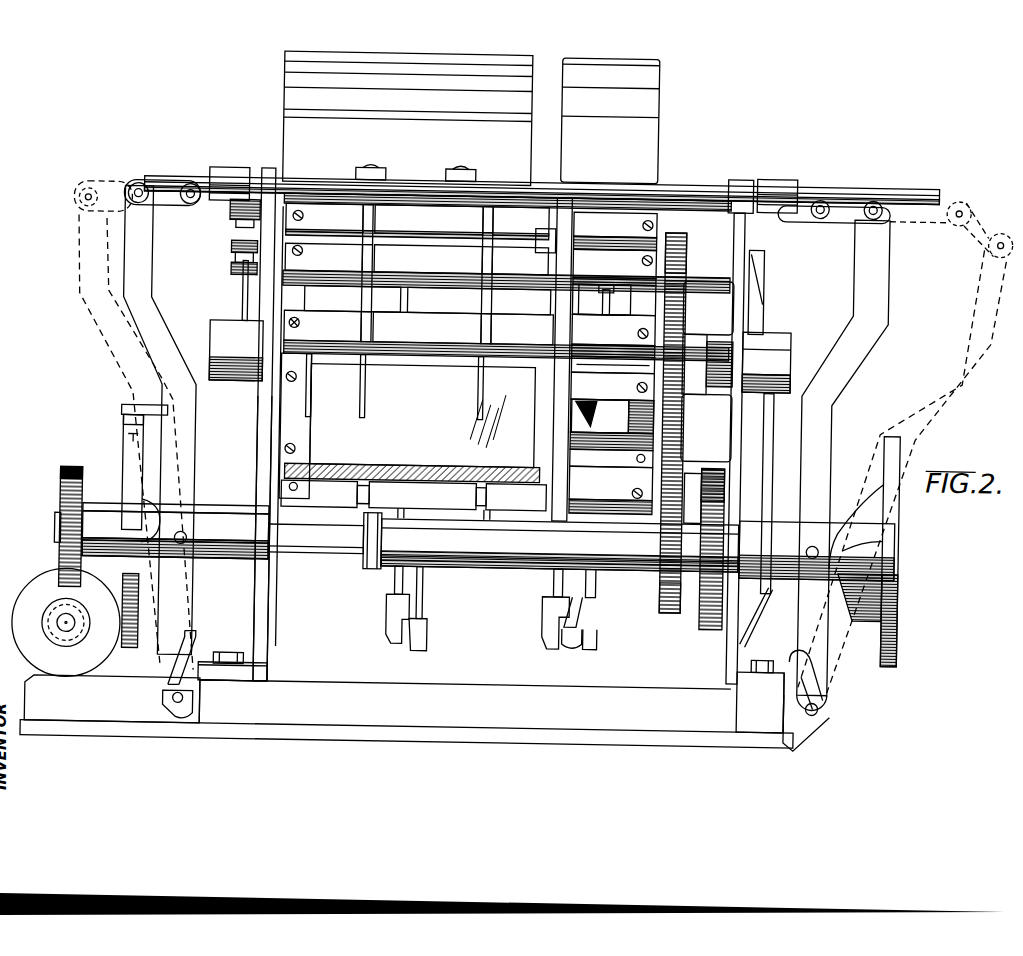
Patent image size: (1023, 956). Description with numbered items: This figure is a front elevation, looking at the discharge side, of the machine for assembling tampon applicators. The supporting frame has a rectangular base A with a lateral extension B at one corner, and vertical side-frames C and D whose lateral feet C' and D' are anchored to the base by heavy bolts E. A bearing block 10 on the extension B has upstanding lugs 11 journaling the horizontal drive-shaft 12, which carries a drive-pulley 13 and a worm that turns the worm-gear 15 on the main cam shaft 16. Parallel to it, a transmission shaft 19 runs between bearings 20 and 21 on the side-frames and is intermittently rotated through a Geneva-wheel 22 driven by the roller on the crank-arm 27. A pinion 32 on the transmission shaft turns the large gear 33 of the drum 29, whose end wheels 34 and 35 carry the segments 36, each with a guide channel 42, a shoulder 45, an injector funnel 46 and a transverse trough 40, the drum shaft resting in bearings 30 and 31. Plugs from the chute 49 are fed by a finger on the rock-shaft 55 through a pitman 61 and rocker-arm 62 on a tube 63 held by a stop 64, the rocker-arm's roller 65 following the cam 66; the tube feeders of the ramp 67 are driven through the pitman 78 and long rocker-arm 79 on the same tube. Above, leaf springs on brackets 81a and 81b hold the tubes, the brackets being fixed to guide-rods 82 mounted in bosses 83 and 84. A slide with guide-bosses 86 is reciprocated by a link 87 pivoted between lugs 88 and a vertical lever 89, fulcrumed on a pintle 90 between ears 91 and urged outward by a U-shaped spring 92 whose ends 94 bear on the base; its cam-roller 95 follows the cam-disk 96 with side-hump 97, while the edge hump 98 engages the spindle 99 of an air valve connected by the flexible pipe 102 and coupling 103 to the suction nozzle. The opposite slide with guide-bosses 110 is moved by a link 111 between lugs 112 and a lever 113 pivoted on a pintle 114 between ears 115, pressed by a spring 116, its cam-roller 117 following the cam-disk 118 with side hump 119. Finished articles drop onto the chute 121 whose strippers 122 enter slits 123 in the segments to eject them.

The bearing block 10 is at (37, 670).
The upstanding spaced lugs 11 is at (39, 610).
The horizontal drive-shaft 12 is at (70, 635).
The drive-pulley 13 is at (42, 585).
The worm-gear 15 is at (60, 475).
The main actuating or cam shaft 16 is at (54, 520).
The transmission shaft 19 is at (312, 560).
The bearing 20 is at (249, 561).
The bearing 21 is at (770, 576).
The Geneva-wheel 22 is at (705, 628).
The crank-arm 27 is at (692, 505).
The drum 29 is at (441, 506).
The bearing 30 is at (227, 330).
The bearing 31 is at (781, 352).
The pinion 32 is at (665, 614).
The large gear 33 is at (678, 308).
The end wheel 34 is at (308, 299).
The end wheel 35 is at (650, 278).
The segments 36 is at (453, 286).
The transverse trough 40 is at (558, 395).
The guide channel 42 is at (427, 328).
The shoulder 45 is at (427, 350).
The injector funnel 46 is at (538, 234).
The chute 49 is at (651, 152).
The rock-shaft 55 is at (710, 265).
The pitman 61 is at (555, 575).
The rocker-arm 62 is at (581, 646).
The tube 63 is at (476, 560).
The stop 64 is at (365, 565).
The roller 65 is at (590, 635).
The cam 66 is at (597, 582).
The ramp 67 is at (415, 75).
The pitman 78 is at (395, 580).
The long rocker-arm 79 is at (424, 595).
The bracket 81a is at (352, 172).
The bracket 81b is at (480, 172).
The guide-rods 82 is at (412, 182).
The bosses 83 is at (275, 172).
The bosses 84 is at (736, 176).
The guide-bosses 86 is at (226, 172).
The link 87 is at (168, 210).
The lugs 88 is at (220, 213).
The lever 89 is at (145, 263).
The pintle 90 is at (187, 703).
The ears 91 is at (180, 712).
The spring 92 is at (162, 664).
The spring ends 94 is at (262, 668).
The cam-roller 95 is at (198, 510).
The cam-disk 96 is at (125, 465).
The side-hump 97 is at (145, 538).
The edge hump 98 is at (123, 422).
The spindle 99 is at (121, 407).
The flexible pipe 102 is at (240, 290).
The coupling 103 is at (230, 254).
The guide-bosses 110 is at (775, 175).
The link 111 is at (846, 225).
The lugs 112 is at (813, 212).
The lever 113 is at (881, 275).
The pintle 114 is at (821, 707).
The ears 115 is at (803, 731).
The spring 116 is at (825, 674).
The cam-roller 117 is at (788, 582).
The cam-disk 118 is at (892, 574).
The side hump 119 is at (862, 539).
The chute 121 is at (408, 446).
The strippers 122 is at (365, 378).
The transverse slits 123 is at (491, 326).
The rectangular base A is at (330, 687).
The lateral extension B is at (82, 733).
The side-frame C is at (275, 539).
The lateral foot C' is at (229, 685).
The side-frame D is at (724, 449).
The lateral foot D' is at (760, 702).
The bolts E is at (236, 657).